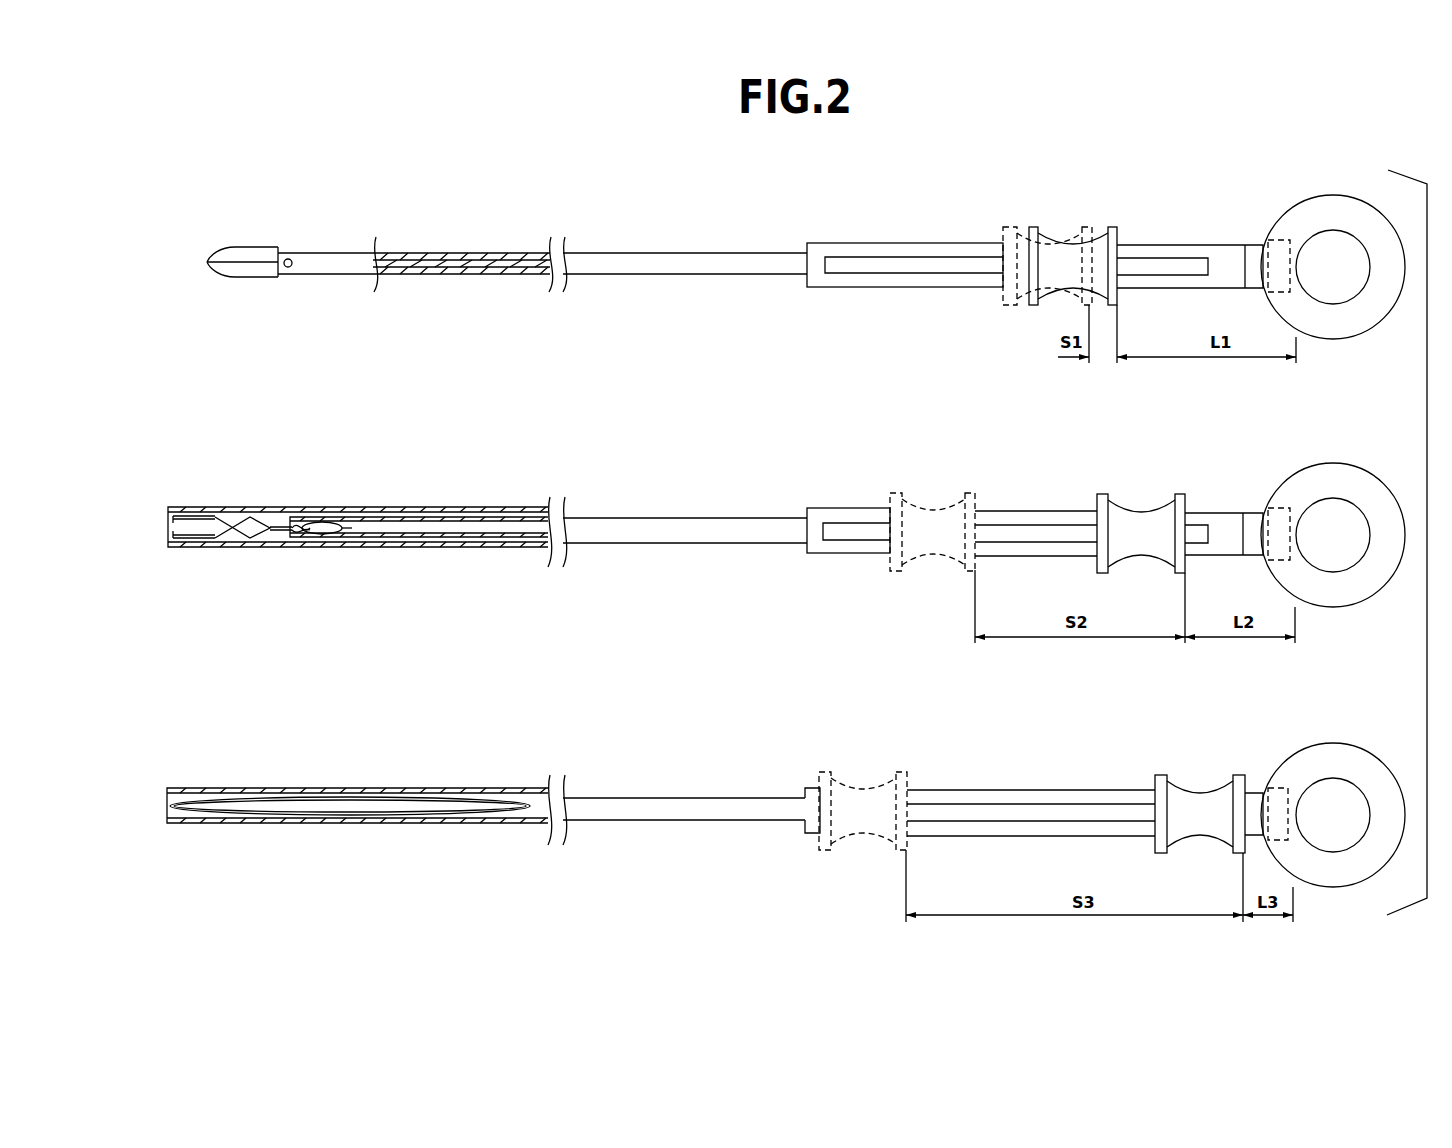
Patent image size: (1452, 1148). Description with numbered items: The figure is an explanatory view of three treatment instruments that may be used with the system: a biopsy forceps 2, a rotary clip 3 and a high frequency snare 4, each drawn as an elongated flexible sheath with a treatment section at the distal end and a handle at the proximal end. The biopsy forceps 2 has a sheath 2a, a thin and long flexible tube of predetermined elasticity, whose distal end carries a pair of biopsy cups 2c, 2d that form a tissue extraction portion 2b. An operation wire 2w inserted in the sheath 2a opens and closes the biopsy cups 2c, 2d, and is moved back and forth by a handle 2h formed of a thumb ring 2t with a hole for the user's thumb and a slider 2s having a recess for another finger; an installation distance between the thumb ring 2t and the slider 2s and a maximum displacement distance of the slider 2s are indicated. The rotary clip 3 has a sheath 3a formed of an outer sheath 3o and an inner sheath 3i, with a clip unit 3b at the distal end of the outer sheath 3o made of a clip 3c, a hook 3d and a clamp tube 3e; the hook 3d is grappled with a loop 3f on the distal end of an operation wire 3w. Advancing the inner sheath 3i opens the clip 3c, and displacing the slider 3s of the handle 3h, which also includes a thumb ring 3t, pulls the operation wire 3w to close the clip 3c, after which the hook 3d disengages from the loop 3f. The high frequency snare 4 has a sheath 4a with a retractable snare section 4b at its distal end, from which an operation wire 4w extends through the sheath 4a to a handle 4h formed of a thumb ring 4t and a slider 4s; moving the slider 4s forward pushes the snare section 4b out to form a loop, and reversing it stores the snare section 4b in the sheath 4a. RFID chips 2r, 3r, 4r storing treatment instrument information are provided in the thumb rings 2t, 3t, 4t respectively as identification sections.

The biopsy forceps 2 is at (726, 230).
The sheath 2a is at (650, 247).
The tissue extraction portion 2b is at (300, 160).
The biopsy cup 2c is at (242, 274).
The biopsy cup 2d is at (238, 253).
The operation wire 2w is at (423, 263).
The slider 2s is at (1012, 228).
The handle 2h is at (1247, 160).
The finger ring (thumb ring) 2t is at (1267, 238).
The IC chip with built-in treatment instrument ID (RFID) 2r is at (1307, 240).
The rotary clip 3 is at (724, 495).
The sheath 3a is at (575, 425).
The clip unit 3b is at (395, 425).
The clip 3c is at (222, 515).
The hook 3d is at (280, 513).
The clip clamp tube (clamp tube) 3e is at (307, 513).
The loop 3f is at (323, 520).
The operation wire 3w is at (423, 528).
The inner sheath 3i is at (472, 517).
The outer sheath 3o is at (650, 517).
The slider 3s is at (933, 508).
The handle 3h is at (1277, 430).
The thumb ring 3t is at (1283, 502).
The IC chip with built-in treatment instrument ID (RFID) 3r is at (1308, 503).
The high frequency snare 4 is at (722, 775).
The sheath 4a is at (650, 797).
The snare section 4b is at (363, 795).
The operation wire 4w is at (537, 808).
The slider 4s is at (865, 788).
The handle 4h is at (1277, 712).
The thumb ring 4t is at (1280, 780).
The IC chip with built-in treatment instrument ID (RFID) 4r is at (1308, 783).